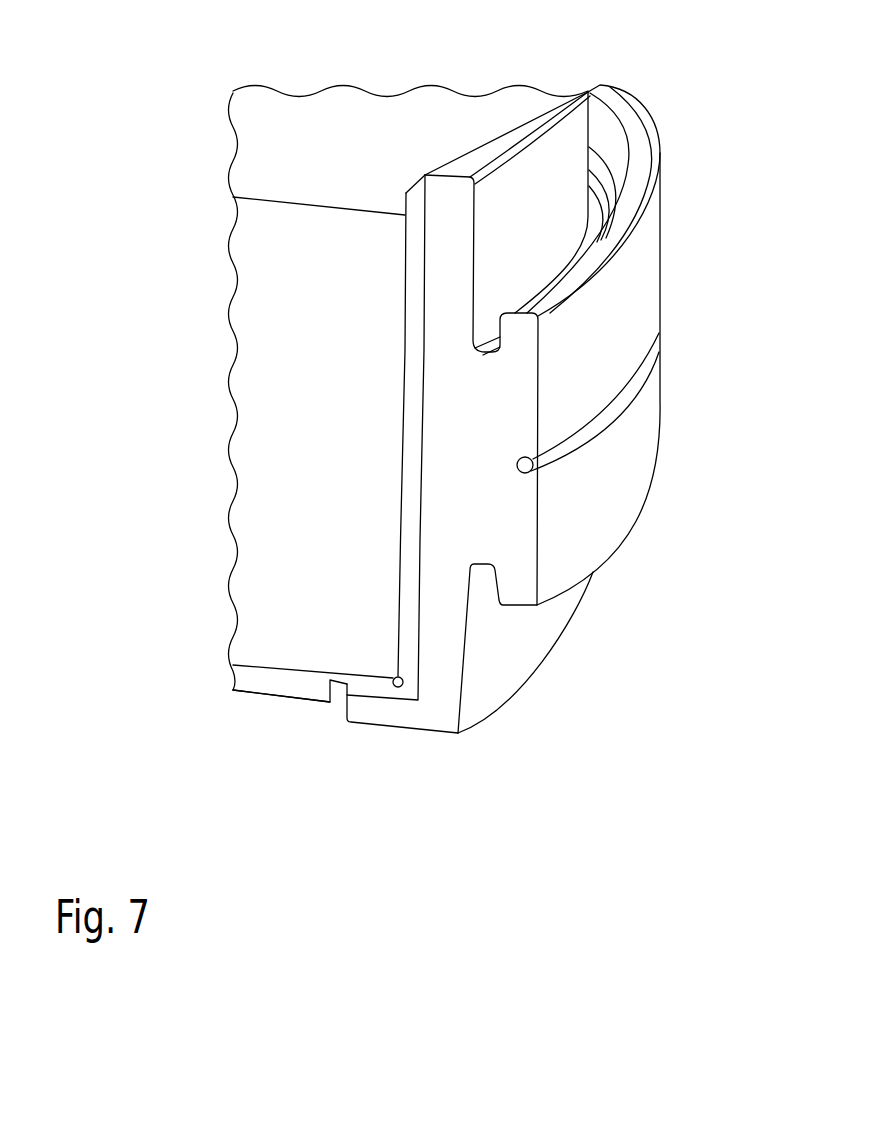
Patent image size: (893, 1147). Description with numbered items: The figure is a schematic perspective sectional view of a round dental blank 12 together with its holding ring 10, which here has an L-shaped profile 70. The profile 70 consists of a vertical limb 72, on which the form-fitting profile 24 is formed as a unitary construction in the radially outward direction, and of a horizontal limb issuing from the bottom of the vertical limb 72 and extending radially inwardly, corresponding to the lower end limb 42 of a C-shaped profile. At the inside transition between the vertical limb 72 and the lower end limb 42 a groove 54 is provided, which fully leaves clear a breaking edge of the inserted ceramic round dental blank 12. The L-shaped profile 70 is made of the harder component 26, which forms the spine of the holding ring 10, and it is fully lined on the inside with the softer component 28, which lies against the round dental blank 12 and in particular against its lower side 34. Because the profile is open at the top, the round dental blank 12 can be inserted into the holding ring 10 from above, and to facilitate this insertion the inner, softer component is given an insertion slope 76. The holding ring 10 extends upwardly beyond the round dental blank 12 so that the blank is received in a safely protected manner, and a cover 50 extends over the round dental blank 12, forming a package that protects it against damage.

The holding ring 10 is at (668, 566).
The round dental blank 12 is at (250, 310).
The form-fitting profile 24 is at (640, 290).
The harder component 26 is at (520, 118).
The softer component 28 is at (412, 612).
The lower side 34 is at (258, 732).
The lower end limb 42 is at (378, 710).
The cover 50 is at (250, 680).
The groove 54 is at (389, 667).
The L-shaped profile 70 is at (448, 445).
The vertical limb 72 is at (465, 377).
The insertion slope 76 is at (406, 180).